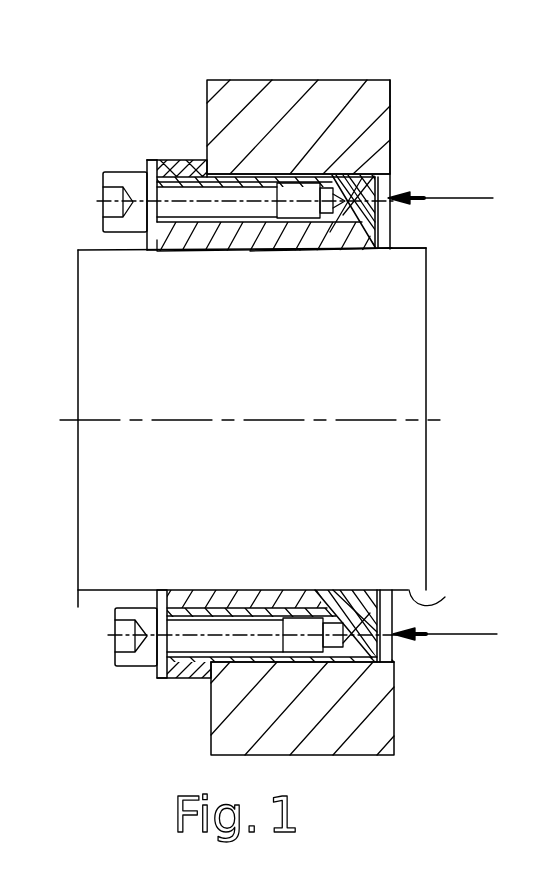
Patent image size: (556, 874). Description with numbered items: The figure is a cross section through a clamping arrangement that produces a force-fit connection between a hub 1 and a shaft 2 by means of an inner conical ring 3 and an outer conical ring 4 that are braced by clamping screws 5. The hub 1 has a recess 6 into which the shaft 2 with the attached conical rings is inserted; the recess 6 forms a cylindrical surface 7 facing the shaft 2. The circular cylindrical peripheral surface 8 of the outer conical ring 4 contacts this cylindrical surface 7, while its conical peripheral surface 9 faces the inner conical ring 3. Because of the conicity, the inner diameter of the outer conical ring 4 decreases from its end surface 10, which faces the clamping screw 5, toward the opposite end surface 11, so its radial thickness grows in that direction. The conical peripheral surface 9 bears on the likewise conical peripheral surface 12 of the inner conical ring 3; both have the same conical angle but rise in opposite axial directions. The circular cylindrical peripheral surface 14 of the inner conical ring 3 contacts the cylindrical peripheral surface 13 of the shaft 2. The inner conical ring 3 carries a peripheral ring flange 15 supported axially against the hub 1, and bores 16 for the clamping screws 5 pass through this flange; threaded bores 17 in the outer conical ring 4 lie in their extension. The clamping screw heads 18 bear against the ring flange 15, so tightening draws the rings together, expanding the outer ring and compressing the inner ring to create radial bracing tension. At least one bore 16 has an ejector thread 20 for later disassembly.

The hub 1 is at (338, 90).
The shaft 2 is at (97, 355).
The inner conical ring 3 is at (185, 236).
The outer conical ring 4 is at (372, 172).
The clamping screw 5 is at (102, 192).
The recess 6 is at (385, 185).
The cylindrical surface 7 is at (391, 657).
The peripheral surface 8 is at (360, 188).
The conical peripheral surface 9 is at (333, 245).
The end surface 10 is at (147, 245).
The end surface 11 is at (385, 246).
The conical peripheral surface 12 is at (348, 242).
The cylindrical peripheral surface 13 is at (407, 245).
The circular cylindrical peripheral surface 14 is at (278, 250).
The ring flange 15 is at (158, 163).
The bore 16 is at (172, 170).
The threaded bore 17 is at (285, 177).
The clamping screw head 18 is at (121, 175).
The ejector thread 20 is at (188, 160).